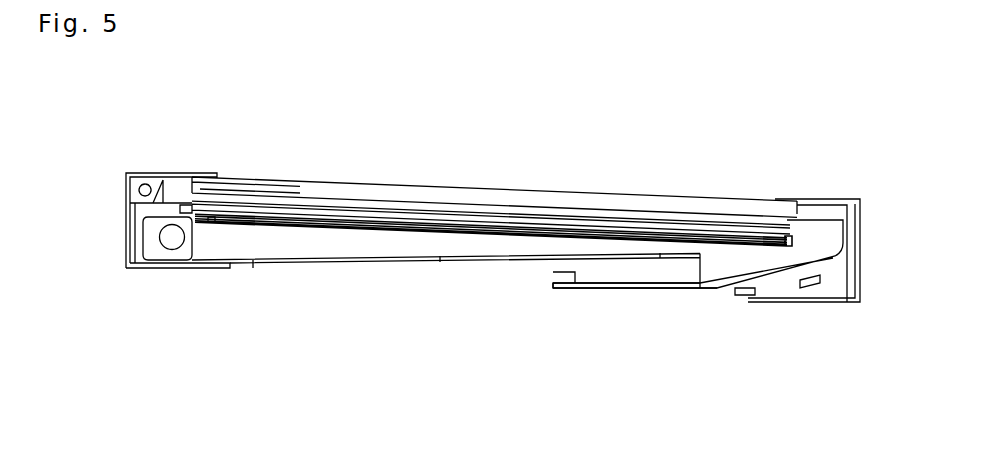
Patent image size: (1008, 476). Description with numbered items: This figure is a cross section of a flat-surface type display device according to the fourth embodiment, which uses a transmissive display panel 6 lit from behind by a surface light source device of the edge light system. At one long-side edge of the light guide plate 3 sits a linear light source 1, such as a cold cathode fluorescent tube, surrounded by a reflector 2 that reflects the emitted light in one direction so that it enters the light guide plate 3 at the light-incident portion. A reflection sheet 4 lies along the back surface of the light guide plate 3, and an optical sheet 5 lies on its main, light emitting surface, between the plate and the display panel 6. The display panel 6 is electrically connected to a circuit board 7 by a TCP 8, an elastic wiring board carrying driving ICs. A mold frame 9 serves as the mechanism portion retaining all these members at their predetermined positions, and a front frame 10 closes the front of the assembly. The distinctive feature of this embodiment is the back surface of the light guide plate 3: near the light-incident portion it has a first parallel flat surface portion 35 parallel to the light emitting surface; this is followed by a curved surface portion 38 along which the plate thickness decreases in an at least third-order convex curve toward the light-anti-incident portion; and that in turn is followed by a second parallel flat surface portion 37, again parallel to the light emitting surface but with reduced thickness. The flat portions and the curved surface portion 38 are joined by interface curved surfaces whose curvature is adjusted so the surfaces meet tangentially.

The linear light source 1 is at (171, 235).
The reflector 2 is at (172, 275).
The light guide plate 3 is at (297, 247).
The reflection sheet 4 is at (415, 260).
The optical sheet 5 is at (295, 197).
The transmissive display panel 6 is at (393, 192).
The circuit board 7 is at (642, 288).
The TCP 8 is at (747, 295).
The mold frame 9 is at (715, 272).
The front frame 10 is at (153, 170).
The first parallel flat surface portion 35 is at (250, 260).
The second parallel flat surface portion 37 is at (672, 258).
The curved surface portion 38 is at (447, 257).